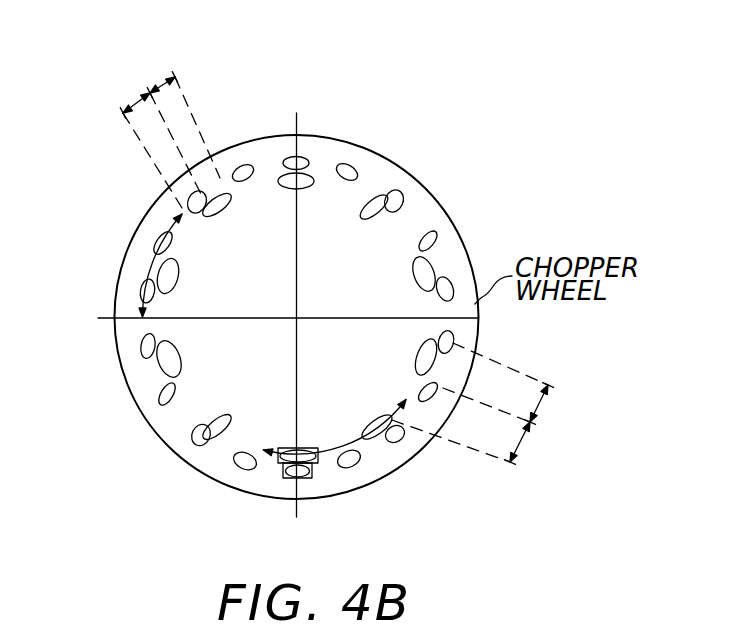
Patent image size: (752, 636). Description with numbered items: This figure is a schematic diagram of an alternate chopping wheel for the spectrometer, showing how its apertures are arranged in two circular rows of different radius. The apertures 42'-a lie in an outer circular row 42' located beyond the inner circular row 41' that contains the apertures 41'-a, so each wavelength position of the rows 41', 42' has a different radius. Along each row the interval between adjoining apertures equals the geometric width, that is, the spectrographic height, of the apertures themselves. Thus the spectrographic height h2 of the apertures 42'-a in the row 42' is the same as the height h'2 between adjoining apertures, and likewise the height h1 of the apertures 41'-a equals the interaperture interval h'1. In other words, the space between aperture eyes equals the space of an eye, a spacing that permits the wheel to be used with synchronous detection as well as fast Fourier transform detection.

The spectrographic height of apertures 42'-a h2 is at (161, 84).
The interaperture interval of row 42' h'2 is at (129, 122).
The spectrographic height of apertures 41'-a h1 is at (541, 404).
The interaperture interval of row 41' h'1 is at (490, 453).
The outer circular row of apertures 42' is at (107, 265).
The apertures of outer row 42'-a is at (453, 185).
The apertures of inner row 41'-a is at (212, 284).
The inner circular row of apertures 41' is at (334, 413).